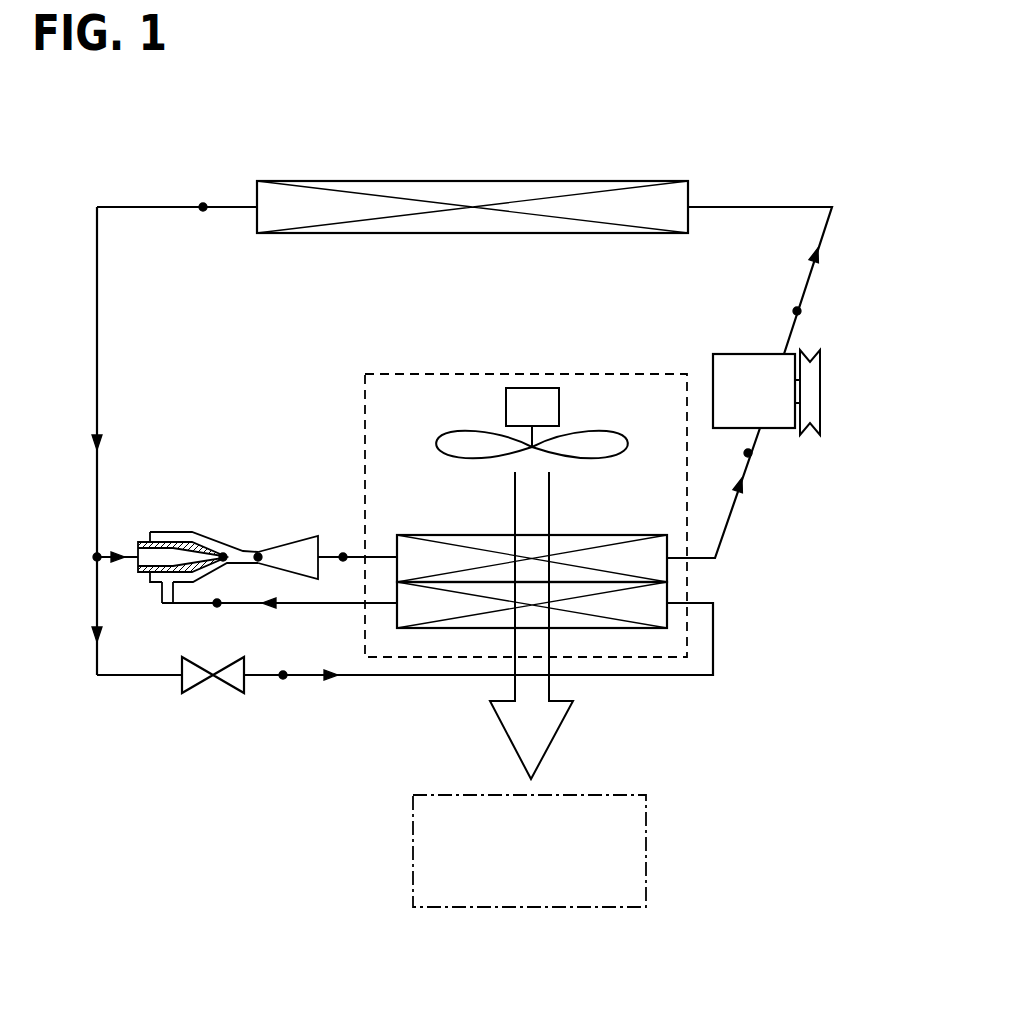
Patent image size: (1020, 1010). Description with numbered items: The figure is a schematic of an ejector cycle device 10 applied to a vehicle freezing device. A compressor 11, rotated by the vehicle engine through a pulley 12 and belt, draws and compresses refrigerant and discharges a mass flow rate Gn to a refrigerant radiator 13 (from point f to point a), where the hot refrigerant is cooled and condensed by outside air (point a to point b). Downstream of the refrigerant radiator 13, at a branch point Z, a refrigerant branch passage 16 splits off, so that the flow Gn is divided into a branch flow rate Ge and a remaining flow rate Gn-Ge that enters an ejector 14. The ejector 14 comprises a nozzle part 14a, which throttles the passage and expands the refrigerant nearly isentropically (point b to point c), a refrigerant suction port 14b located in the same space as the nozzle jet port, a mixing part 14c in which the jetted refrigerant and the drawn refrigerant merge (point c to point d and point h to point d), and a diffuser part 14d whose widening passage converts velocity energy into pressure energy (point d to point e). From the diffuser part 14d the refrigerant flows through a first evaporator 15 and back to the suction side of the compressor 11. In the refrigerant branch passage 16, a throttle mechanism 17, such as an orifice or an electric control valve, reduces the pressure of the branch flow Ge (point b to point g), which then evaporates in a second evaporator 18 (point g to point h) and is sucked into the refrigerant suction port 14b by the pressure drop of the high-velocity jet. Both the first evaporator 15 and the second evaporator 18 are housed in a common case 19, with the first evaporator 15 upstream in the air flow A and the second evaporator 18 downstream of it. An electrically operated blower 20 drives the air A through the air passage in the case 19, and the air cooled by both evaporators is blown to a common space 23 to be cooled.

The ejector cycle device 10 is at (762, 196).
The compressor 11 is at (741, 353).
The pulley 12 is at (821, 363).
The refrigerant radiator 13 is at (572, 181).
The ejector 14 is at (252, 518).
The nozzle part 14a is at (175, 541).
The refrigerant suction port 14b is at (160, 587).
The mixing part 14c is at (246, 550).
The diffuser part 14d is at (284, 560).
The first evaporator 15 is at (627, 534).
The refrigerant branch passage 16 is at (130, 676).
The throttle mechanism 17 is at (204, 694).
The second evaporator 18 is at (412, 623).
The case 19 is at (689, 498).
The electrically operated blower 20 is at (452, 433).
The space to be cooled 23 is at (593, 908).
The operation point a is at (799, 312).
The operation point b is at (203, 204).
The operation point c is at (224, 559).
The operation point d is at (259, 559).
The operation point e is at (343, 559).
The operation point f is at (750, 454).
The operation point g is at (283, 677).
The operation point h is at (218, 605).
The branch point Z is at (94, 555).
The air flow A is at (550, 690).
The mass flow rate of refrigerant discharged from the compressor Gn is at (814, 270).
The flow rate of branch refrigerant Ge is at (95, 620).
The flow rate of refrigerant flowing in the nozzle part Gn-Ge is at (99, 552).